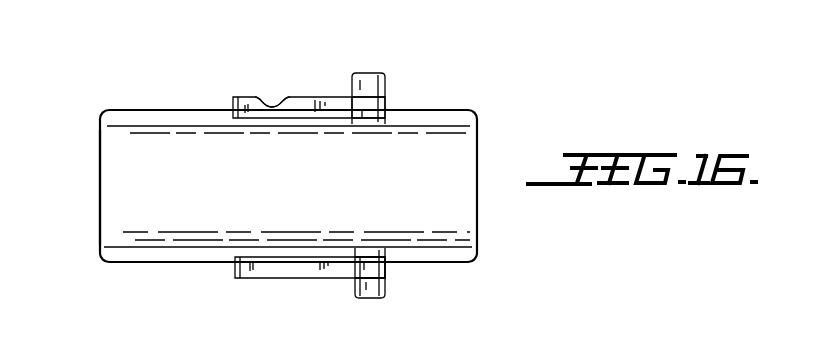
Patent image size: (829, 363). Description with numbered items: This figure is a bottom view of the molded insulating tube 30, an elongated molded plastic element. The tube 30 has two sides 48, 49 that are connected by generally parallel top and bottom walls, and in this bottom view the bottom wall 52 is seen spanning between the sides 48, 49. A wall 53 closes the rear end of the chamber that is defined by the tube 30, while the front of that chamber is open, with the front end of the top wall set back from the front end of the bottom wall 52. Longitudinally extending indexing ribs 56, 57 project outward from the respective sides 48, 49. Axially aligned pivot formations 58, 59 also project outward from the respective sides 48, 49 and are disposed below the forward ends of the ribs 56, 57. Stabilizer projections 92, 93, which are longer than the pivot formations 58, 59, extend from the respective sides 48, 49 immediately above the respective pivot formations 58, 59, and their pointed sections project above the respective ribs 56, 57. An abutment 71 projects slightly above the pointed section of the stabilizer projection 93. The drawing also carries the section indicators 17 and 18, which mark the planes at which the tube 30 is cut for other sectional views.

The insulating tube 30 is at (203, 270).
The side 48 is at (433, 262).
The side 49 is at (416, 109).
The bottom wall 52 is at (189, 150).
The wall 53 is at (117, 192).
The indexing rib 56 is at (273, 267).
The indexing rib 57 is at (304, 102).
The pivot formation 58 is at (378, 264).
The pivot formation 59 is at (376, 109).
The abutment 71 is at (275, 97).
The stabilizer projection 92 is at (368, 289).
The stabilizer projection 93 is at (365, 85).
The section line 17 is at (112, 71).
The section line 18 is at (100, 300).